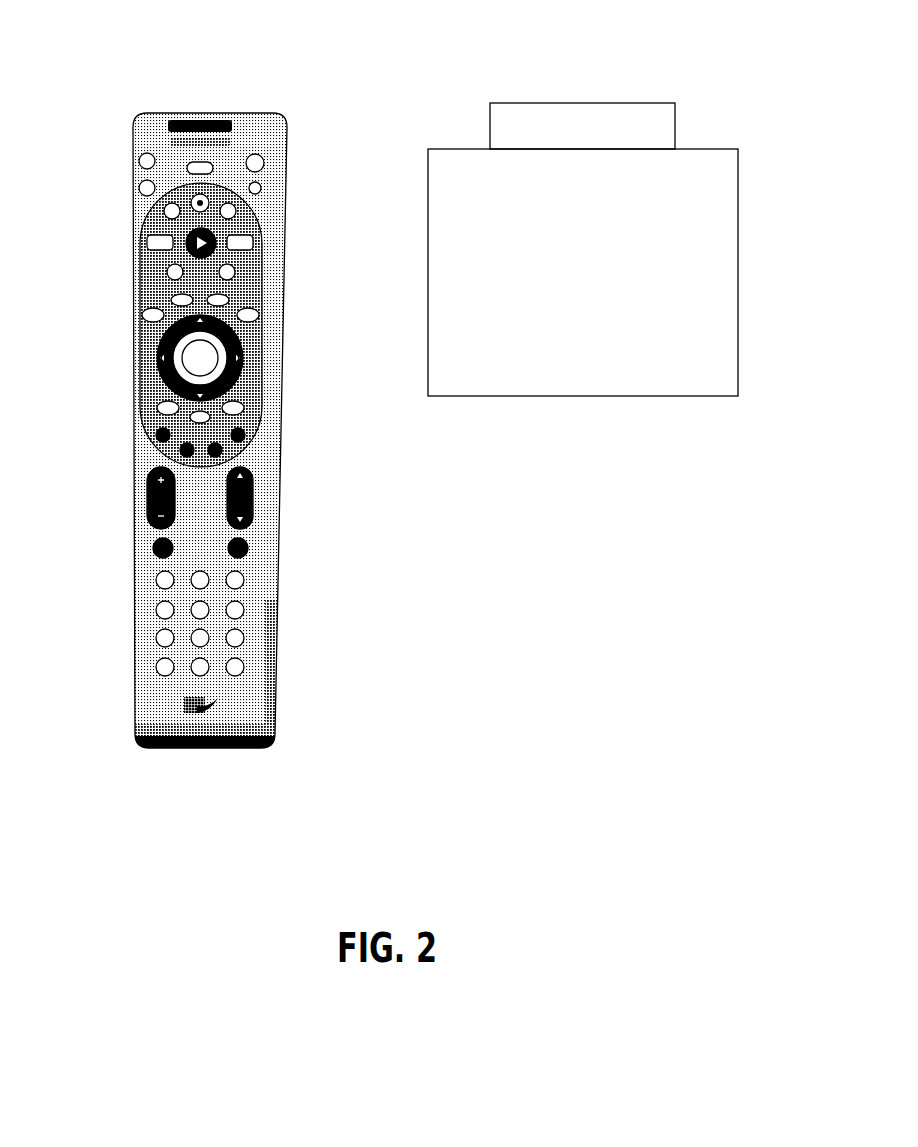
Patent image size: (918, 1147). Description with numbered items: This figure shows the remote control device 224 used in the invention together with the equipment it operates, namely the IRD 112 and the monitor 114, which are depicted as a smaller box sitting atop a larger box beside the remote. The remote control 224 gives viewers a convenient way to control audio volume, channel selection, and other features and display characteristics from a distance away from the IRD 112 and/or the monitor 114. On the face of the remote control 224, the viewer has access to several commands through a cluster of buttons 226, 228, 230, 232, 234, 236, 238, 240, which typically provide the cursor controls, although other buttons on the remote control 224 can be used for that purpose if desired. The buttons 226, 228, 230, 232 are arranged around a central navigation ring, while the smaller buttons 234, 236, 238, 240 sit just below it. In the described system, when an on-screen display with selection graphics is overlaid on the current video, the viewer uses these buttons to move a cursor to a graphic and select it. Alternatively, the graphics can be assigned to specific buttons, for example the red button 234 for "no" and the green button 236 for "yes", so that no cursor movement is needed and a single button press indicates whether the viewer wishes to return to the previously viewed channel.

The remote control device 224 is at (217, 85).
The button 226 is at (222, 327).
The button 228 is at (243, 372).
The button 230 is at (183, 387).
The button 232 is at (167, 361).
The red button 234 is at (155, 437).
The green button 236 is at (181, 452).
The button 238 is at (243, 440).
The button 240 is at (220, 454).
The IRD 112 is at (581, 100).
The monitor 114 is at (738, 270).